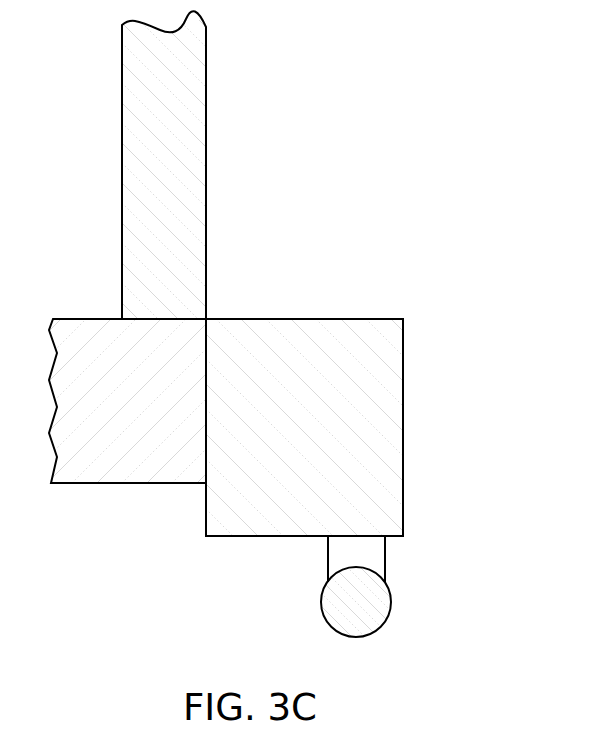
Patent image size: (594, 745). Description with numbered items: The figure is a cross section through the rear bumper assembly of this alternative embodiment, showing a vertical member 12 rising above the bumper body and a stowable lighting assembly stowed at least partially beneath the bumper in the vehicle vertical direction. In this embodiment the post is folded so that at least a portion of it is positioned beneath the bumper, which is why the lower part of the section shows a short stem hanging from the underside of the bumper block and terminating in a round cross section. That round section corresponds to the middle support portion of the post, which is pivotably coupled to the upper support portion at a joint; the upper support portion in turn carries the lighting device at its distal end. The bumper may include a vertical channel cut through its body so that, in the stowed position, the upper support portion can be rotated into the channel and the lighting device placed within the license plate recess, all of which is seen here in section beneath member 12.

The substrate / wall 12 is at (206, 118).